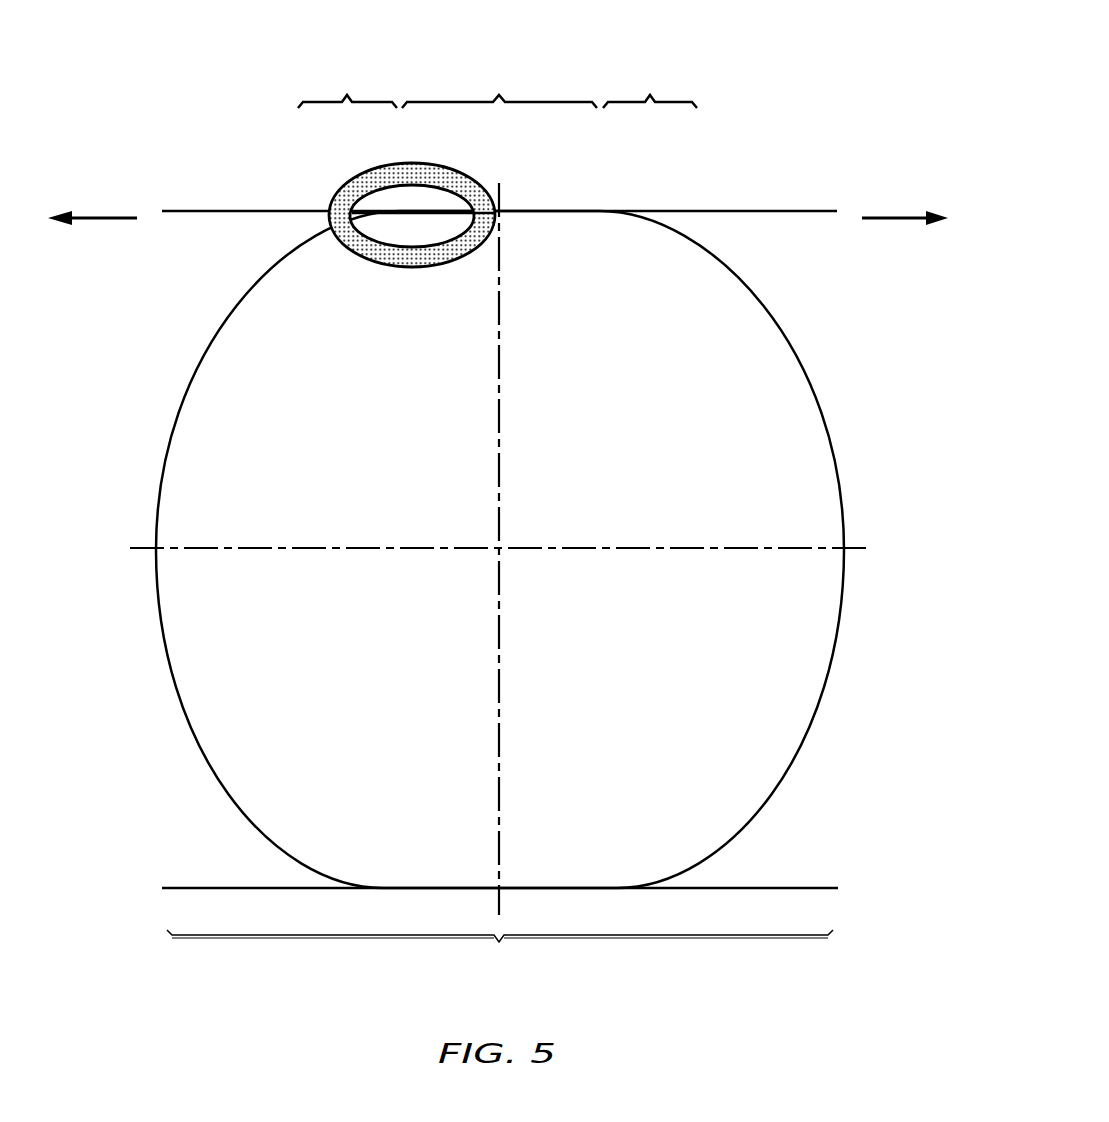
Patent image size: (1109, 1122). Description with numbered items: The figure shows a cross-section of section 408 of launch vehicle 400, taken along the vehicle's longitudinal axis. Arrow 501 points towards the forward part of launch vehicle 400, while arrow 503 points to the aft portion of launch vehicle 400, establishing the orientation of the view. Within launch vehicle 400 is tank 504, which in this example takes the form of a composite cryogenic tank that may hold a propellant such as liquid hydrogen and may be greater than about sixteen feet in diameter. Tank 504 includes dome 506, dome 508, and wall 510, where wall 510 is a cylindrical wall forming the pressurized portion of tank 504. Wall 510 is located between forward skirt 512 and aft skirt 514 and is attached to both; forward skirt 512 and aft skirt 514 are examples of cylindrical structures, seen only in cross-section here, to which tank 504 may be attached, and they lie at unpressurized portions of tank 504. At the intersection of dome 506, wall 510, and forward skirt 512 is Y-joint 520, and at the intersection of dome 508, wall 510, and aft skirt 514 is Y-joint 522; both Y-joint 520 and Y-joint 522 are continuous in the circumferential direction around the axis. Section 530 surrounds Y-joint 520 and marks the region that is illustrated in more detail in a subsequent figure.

The launch vehicle 400 is at (758, 66).
The section 408 is at (500, 935).
The arrow 501 is at (98, 215).
The arrow 503 is at (900, 214).
The tank 504 is at (553, 488).
The dome 506 is at (163, 642).
The dome 508 is at (812, 388).
The wall 510 is at (499, 137).
The forward skirt 512 is at (347, 85).
The aft skirt 514 is at (650, 85).
The Y-joint 520 is at (390, 212).
The Y-joint 522 is at (600, 213).
The section 530 is at (395, 266).